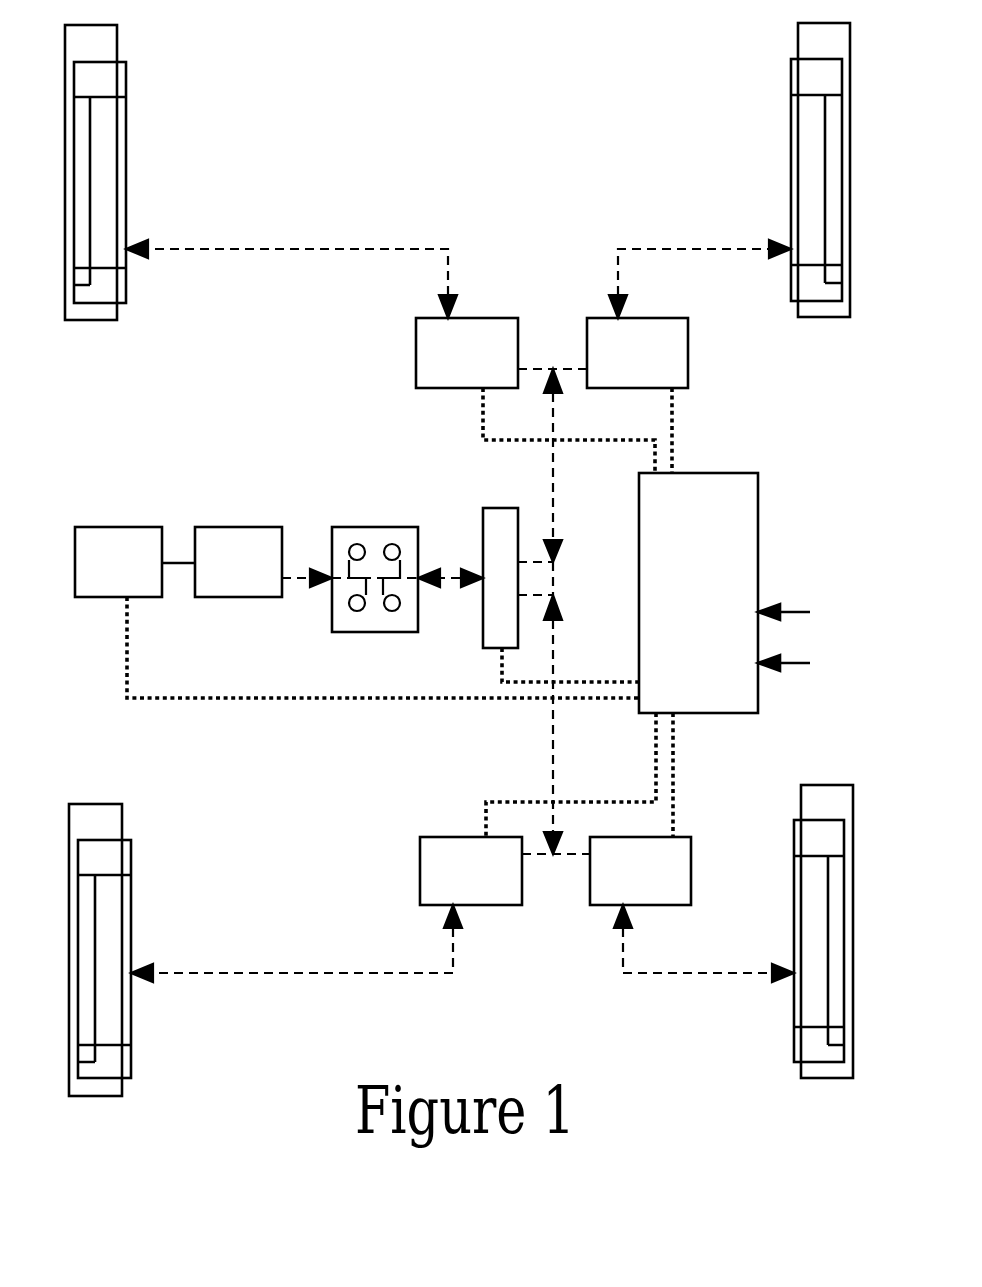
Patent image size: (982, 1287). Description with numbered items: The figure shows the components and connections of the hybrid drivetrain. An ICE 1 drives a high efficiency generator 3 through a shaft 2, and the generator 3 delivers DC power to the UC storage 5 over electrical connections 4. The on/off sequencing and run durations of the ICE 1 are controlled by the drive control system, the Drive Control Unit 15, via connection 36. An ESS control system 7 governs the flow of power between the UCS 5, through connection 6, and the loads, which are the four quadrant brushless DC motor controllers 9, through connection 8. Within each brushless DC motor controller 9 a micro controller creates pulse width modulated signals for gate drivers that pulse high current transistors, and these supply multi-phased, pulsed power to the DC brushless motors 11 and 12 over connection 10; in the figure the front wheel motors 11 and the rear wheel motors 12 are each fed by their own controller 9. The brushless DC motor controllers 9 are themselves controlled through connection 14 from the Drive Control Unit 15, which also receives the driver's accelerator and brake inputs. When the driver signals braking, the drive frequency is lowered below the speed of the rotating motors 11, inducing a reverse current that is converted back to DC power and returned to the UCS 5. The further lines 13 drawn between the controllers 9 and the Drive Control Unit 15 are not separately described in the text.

The ICE 1 is at (107, 527).
The shaft 2 is at (178, 563).
The high efficiency generator 3 is at (240, 597).
The electrical connections 4 is at (298, 577).
The UC storage 5 is at (377, 527).
The connection 6 is at (447, 587).
The ESS control system 7 is at (510, 508).
The connection 8 is at (553, 765).
The 4 quadrant brushless DC motor controllers 9 is at (416, 331).
The connection 10 is at (346, 249).
The DC brushless motor 11 is at (117, 62).
The DC brushless motor 12 is at (131, 862).
The control line 13 is at (580, 440).
The connection 14 is at (603, 682).
The Drive Control Unit 15 is at (758, 540).
The connection 36 is at (197, 700).